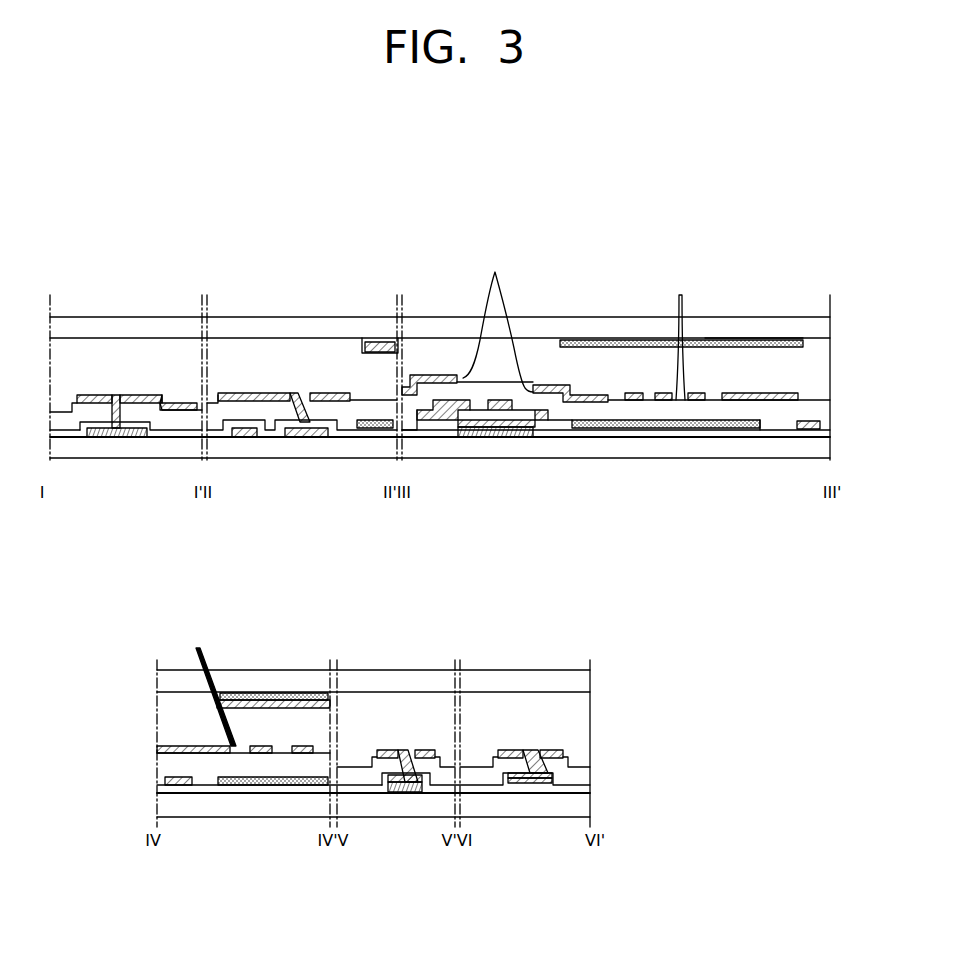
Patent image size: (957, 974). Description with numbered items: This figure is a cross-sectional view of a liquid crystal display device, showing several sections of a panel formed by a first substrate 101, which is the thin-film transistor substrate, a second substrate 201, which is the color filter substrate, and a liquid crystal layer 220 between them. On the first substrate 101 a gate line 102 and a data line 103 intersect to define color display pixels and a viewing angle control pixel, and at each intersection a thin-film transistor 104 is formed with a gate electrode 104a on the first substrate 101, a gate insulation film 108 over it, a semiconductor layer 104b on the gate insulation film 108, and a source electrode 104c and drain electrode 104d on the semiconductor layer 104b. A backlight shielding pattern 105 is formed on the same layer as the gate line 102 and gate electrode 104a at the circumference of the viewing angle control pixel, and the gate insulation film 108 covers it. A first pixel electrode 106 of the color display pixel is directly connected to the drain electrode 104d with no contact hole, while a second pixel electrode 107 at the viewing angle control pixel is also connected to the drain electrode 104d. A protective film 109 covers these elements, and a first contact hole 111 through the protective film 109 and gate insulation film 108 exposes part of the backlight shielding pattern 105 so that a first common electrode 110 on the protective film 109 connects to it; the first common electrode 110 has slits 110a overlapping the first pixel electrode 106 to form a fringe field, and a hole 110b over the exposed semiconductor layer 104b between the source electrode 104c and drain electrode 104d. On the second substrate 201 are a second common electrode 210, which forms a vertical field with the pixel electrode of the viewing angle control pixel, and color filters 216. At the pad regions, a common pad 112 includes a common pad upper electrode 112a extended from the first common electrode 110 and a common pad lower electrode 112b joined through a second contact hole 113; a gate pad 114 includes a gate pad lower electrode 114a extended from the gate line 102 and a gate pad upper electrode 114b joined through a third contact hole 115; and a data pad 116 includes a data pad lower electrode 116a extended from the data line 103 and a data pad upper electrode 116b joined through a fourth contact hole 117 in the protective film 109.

The first substrate 101 is at (830, 455).
The gate line 102 is at (245, 437).
The data line 103 is at (805, 430).
The thin-film transistor 104 is at (493, 487).
The gate electrode 104a is at (495, 478).
The semiconductor layer 104b is at (476, 427).
The source electrode 104c is at (440, 420).
The drain electrode 104d is at (542, 420).
The backlight shielding pattern 105 is at (307, 437).
The first pixel electrode 106 is at (655, 430).
The second pixel electrode 107 is at (366, 428).
The gate insulation film 108 is at (830, 432).
The protective film 109 is at (830, 407).
The first common electrode 110 is at (632, 392).
The slits 110a is at (498, 321).
The hole 110b is at (477, 513).
The first contact hole 111 is at (302, 385).
The common pad 112 is at (132, 484).
The common pad upper electrode 112a is at (147, 403).
The common pad lower electrode 112b is at (100, 437).
The second contact hole 113 is at (116, 380).
The gate pad 114 is at (417, 857).
The gate pad lower electrode 114a is at (400, 792).
The gate pad upper electrode 114b is at (425, 782).
The third contact hole 115 is at (412, 745).
The data pad 116 is at (541, 856).
The data pad lower electrode 116a is at (518, 783).
The data pad upper electrode 116b is at (548, 783).
The fourth contact hole 117 is at (532, 745).
The second substrate 201 is at (830, 320).
The second common electrode 210 is at (364, 342).
The color filters 216 is at (385, 342).
The liquid crystal layer 220 is at (808, 365).